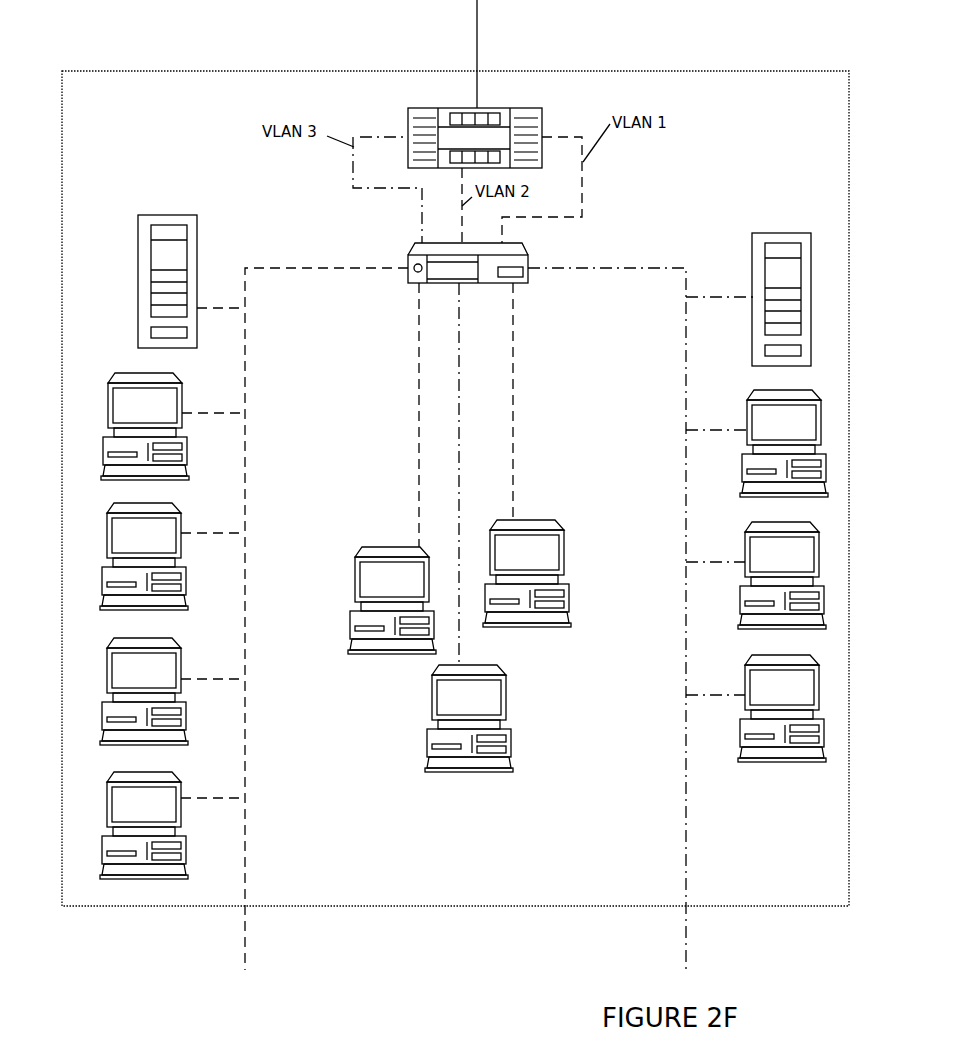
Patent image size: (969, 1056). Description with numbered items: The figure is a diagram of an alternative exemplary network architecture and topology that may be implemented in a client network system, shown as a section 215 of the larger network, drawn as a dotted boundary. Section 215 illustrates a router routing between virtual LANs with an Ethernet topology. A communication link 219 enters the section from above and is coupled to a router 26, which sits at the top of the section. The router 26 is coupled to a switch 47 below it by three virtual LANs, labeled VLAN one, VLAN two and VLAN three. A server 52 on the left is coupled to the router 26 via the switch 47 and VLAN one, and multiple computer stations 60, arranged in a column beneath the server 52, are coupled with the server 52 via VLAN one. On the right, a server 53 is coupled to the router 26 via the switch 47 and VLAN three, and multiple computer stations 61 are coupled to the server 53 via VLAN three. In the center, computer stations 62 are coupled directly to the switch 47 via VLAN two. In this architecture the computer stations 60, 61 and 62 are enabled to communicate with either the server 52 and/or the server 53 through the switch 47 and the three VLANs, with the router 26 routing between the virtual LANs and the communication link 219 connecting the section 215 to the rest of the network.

The section 215 is at (207, 70).
The communication link 219 is at (477, 33).
The router 26 is at (475, 138).
The switch 47 is at (468, 263).
The server 52 is at (167, 281).
The server 53 is at (781, 299).
The computer stations 60 is at (144, 626).
The computer stations 61 is at (626, 581).
The computer stations 62 is at (459, 587).